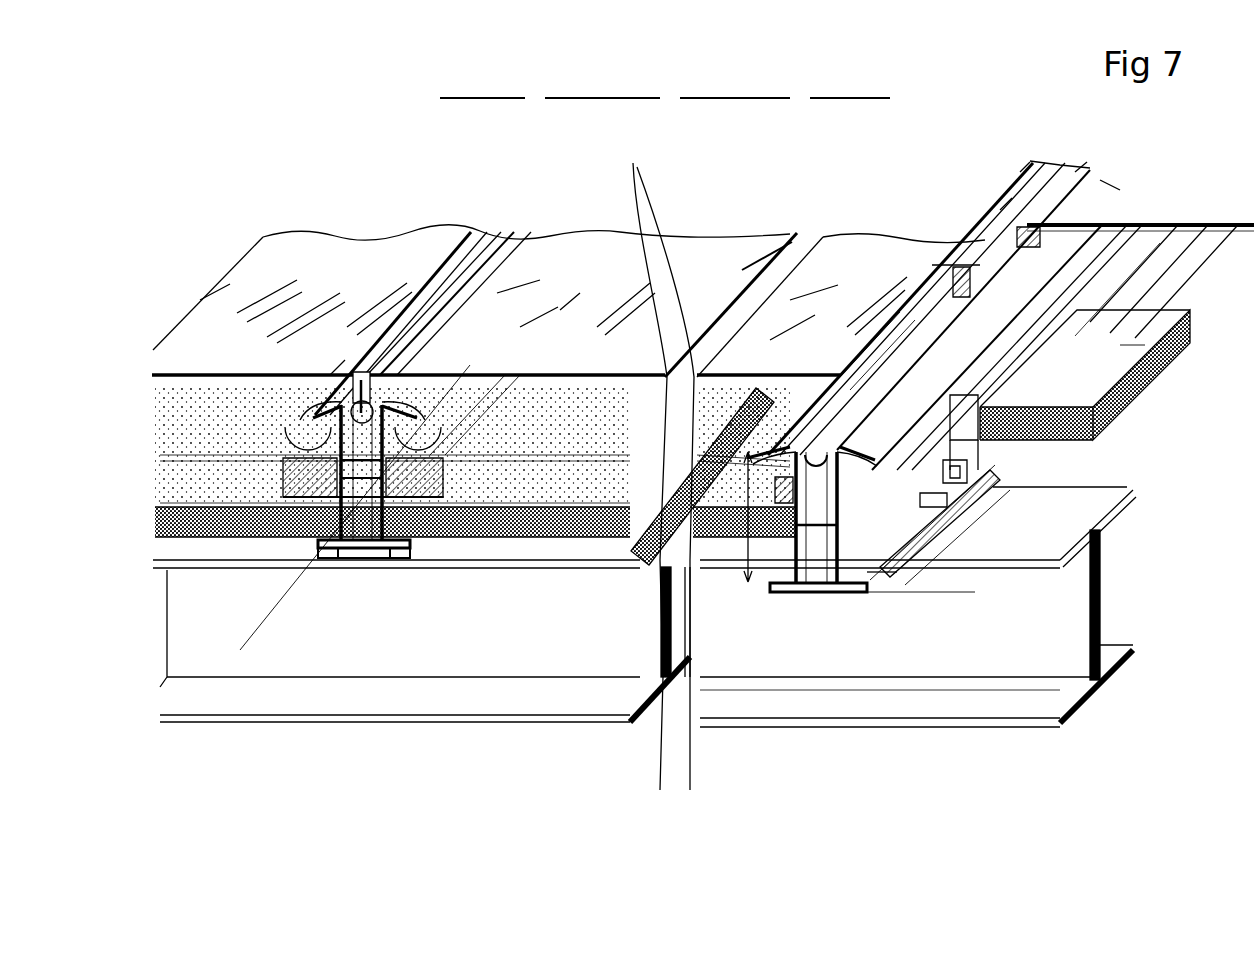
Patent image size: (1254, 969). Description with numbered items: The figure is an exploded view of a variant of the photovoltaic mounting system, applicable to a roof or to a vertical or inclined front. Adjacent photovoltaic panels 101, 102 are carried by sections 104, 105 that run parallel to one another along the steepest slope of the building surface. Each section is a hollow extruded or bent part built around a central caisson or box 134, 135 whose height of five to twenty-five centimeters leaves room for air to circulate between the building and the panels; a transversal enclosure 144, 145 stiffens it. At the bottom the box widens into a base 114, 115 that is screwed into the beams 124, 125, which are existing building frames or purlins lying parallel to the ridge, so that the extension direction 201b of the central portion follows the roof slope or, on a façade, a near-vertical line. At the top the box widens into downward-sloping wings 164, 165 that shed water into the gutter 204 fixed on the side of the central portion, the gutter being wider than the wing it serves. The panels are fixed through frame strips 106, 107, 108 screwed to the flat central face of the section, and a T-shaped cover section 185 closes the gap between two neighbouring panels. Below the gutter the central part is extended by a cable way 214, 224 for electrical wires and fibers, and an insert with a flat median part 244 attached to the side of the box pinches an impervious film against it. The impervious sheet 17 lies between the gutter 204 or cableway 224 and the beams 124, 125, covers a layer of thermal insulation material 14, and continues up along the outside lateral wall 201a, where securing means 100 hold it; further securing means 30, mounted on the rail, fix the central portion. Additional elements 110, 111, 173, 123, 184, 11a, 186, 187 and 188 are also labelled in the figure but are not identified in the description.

The reference line 110 is at (716, 100).
The photovoltaic panel 101 is at (332, 237).
The photovoltaic panel 102 is at (588, 263).
The strip 106 is at (351, 372).
The strip 107 is at (472, 296).
The wing 164 is at (435, 368).
The fastening bolt 111 is at (333, 375).
The layer of thermal insulation material 14 is at (600, 570).
The gutter 204 is at (512, 434).
The cable way 224 is at (468, 481).
The flat median part 244 is at (450, 493).
The base 114 is at (288, 462).
The cable way 214 is at (270, 492).
The section 104 is at (366, 560).
The central caisson or box 134 is at (318, 580).
The transversal enclosure 144 is at (423, 550).
The beam 124 is at (510, 545).
The extension direction 201b is at (283, 635).
The wing 165 is at (1003, 182).
The strip 108 is at (892, 352).
The rail bracket 173 is at (868, 407).
The slab edge 123 is at (808, 372).
The rail 184 is at (1170, 250).
The securing means 100 is at (1123, 407).
The impervious sheet 17 is at (1141, 345).
The bracket 11a is at (964, 432).
The securing means 30 is at (990, 462).
The outside lateral wall 201a is at (950, 532).
The section 105 is at (817, 592).
The central caisson or box 135 is at (748, 582).
The base 115 is at (900, 573).
The transversal enclosure 145 is at (982, 570).
The beam 125 is at (823, 670).
The cover section 185 is at (1005, 225).
The rail part 186 is at (1023, 172).
The rail part 187 is at (1080, 170).
The rail head 188 is at (1113, 190).